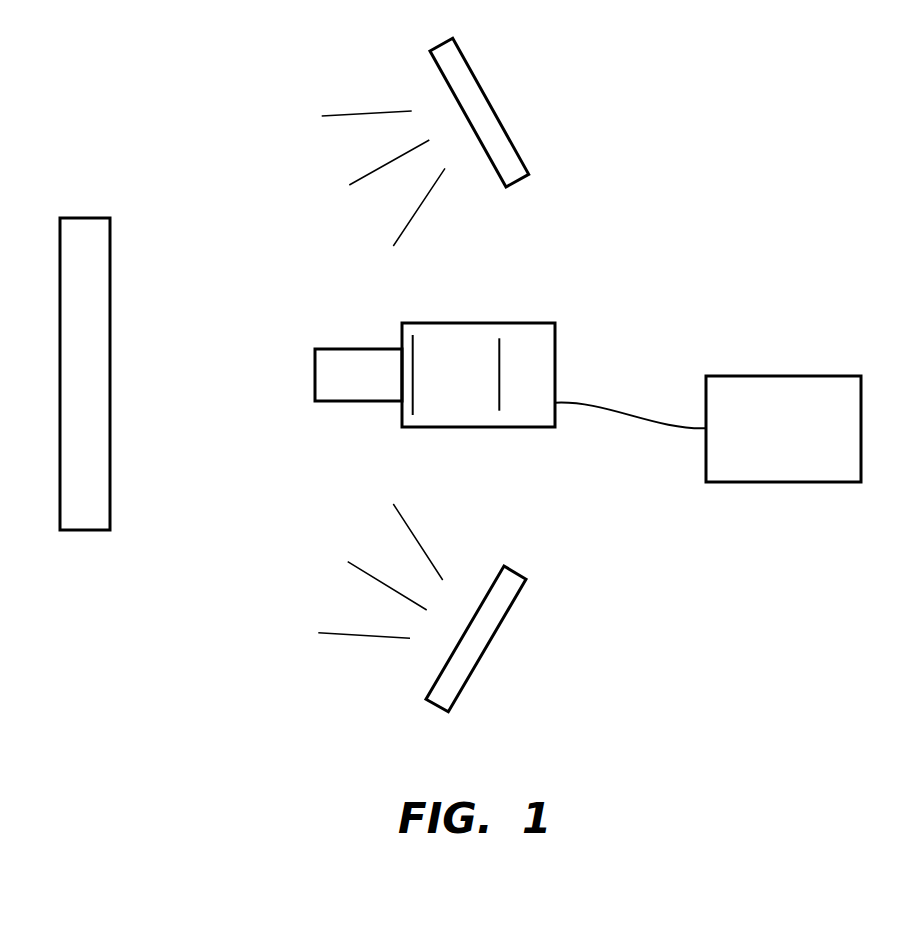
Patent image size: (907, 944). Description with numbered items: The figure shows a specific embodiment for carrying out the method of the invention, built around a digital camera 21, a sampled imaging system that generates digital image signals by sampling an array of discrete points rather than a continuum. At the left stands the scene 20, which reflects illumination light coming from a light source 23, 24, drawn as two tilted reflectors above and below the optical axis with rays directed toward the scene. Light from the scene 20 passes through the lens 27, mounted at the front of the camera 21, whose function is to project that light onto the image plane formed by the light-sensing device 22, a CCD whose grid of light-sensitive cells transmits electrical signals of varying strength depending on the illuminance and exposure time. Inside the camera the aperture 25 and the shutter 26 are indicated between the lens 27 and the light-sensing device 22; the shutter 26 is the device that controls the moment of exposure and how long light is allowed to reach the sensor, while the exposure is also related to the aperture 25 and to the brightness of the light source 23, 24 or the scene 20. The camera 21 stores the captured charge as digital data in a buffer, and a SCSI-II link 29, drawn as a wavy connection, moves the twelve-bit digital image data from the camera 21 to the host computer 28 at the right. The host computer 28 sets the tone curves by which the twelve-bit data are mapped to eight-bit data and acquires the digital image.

The scene 20 is at (78, 230).
The digital camera 21 is at (475, 336).
The light-sensing device 22 is at (500, 386).
The light source 23 is at (463, 633).
The light source 24 is at (466, 120).
The aperture 25 is at (402, 375).
The shutter 26 is at (414, 388).
The lens 27 is at (343, 358).
The host computer 28 is at (787, 384).
The SCSI-II link 29 is at (641, 415).